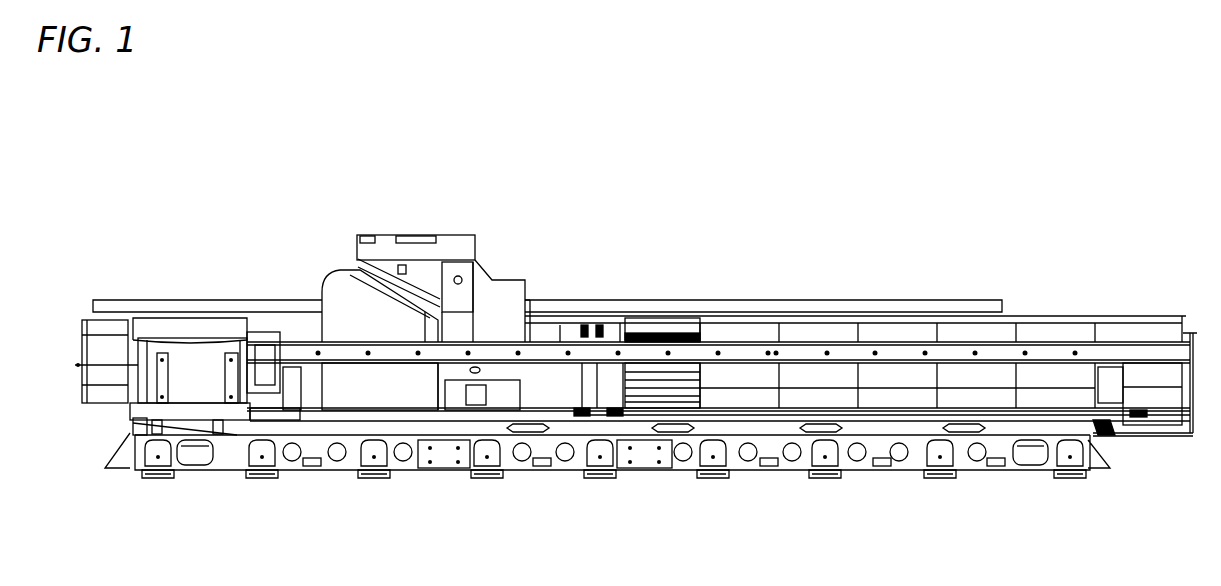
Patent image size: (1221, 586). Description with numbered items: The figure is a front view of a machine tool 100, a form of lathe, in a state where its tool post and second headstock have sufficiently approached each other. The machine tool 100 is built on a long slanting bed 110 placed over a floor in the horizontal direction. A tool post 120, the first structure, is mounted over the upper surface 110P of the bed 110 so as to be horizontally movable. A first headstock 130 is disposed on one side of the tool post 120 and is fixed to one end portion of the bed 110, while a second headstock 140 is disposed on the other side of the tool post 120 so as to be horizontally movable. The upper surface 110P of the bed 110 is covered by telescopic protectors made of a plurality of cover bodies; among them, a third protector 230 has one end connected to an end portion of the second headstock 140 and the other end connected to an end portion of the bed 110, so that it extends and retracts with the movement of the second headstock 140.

The machine tool 100 is at (846, 190).
The bed 110 is at (1140, 435).
The upper surface of the bed 110P is at (648, 405).
The tool post 120 is at (350, 400).
The first headstock 130 is at (207, 347).
The second headstock 140 is at (507, 290).
The third protector 230 is at (889, 377).